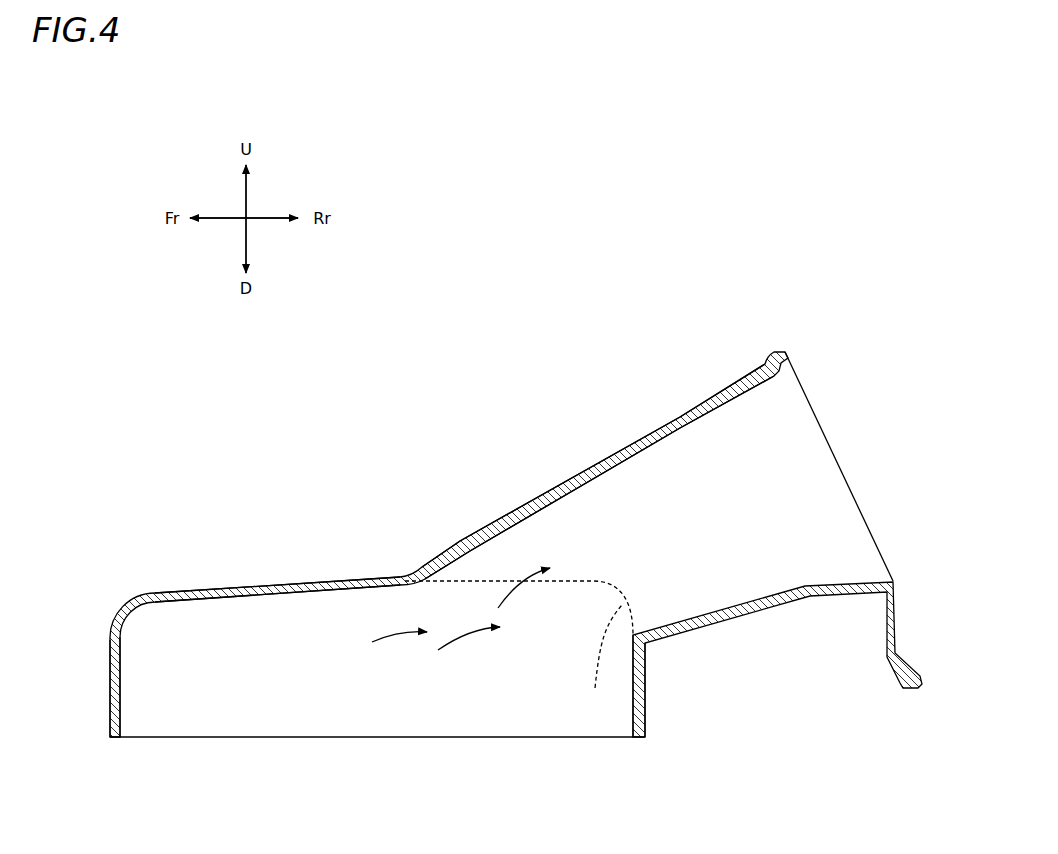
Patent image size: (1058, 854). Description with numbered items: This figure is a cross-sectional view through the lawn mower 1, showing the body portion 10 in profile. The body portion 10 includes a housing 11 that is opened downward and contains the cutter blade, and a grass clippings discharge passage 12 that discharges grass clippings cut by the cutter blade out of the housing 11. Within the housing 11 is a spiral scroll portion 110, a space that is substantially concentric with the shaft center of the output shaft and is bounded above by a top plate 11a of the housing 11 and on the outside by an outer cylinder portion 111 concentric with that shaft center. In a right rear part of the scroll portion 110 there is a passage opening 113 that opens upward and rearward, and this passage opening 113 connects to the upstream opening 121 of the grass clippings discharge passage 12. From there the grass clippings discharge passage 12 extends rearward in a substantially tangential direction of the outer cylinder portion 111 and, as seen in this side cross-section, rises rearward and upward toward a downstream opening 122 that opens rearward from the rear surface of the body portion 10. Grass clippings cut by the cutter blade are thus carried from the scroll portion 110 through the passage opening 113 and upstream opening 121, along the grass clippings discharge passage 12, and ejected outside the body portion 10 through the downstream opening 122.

The vehicle cooling structure 1 is at (920, 307).
The body portion 10 is at (142, 591).
The housing 11 is at (377, 750).
The top plate 11a is at (235, 582).
The scroll portion 110 is at (367, 712).
The outer cylinder portion 111 is at (110, 696).
The grass clippings discharge passage 12 is at (781, 435).
The passage opening 113 is at (598, 659).
The upstream opening 121 is at (563, 600).
The downstream opening 122 is at (838, 463).